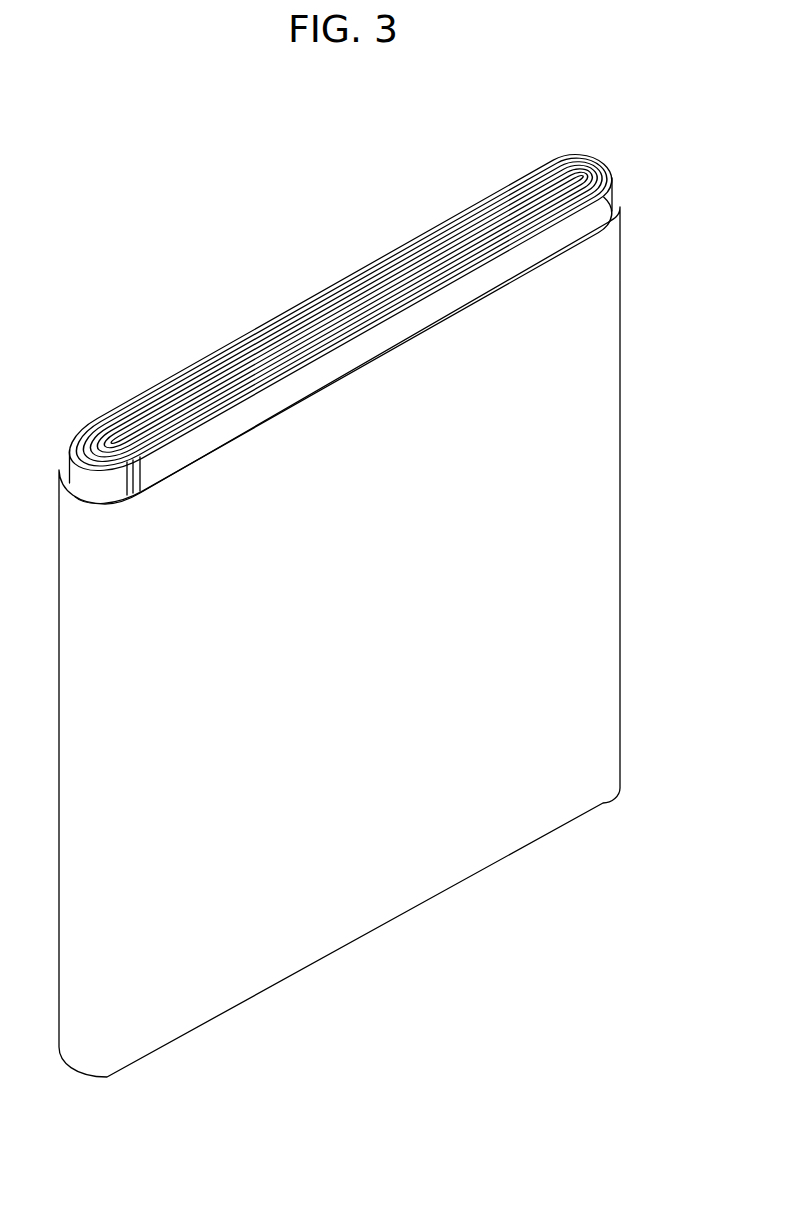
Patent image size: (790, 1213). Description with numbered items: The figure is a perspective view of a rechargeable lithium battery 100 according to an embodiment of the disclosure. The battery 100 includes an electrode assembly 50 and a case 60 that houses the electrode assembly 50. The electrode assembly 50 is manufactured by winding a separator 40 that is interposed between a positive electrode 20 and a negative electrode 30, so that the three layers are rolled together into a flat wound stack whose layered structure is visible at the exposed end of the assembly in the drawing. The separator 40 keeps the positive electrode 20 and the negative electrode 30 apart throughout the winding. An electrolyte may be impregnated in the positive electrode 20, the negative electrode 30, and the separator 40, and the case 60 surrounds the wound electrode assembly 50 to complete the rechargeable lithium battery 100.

The rechargeable lithium battery 100 is at (348, 114).
The positive electrode 20 is at (610, 174).
The negative electrode 30 is at (572, 167).
The separator 40 is at (595, 168).
The electrode assembly 50 is at (296, 276).
The case 60 is at (603, 482).